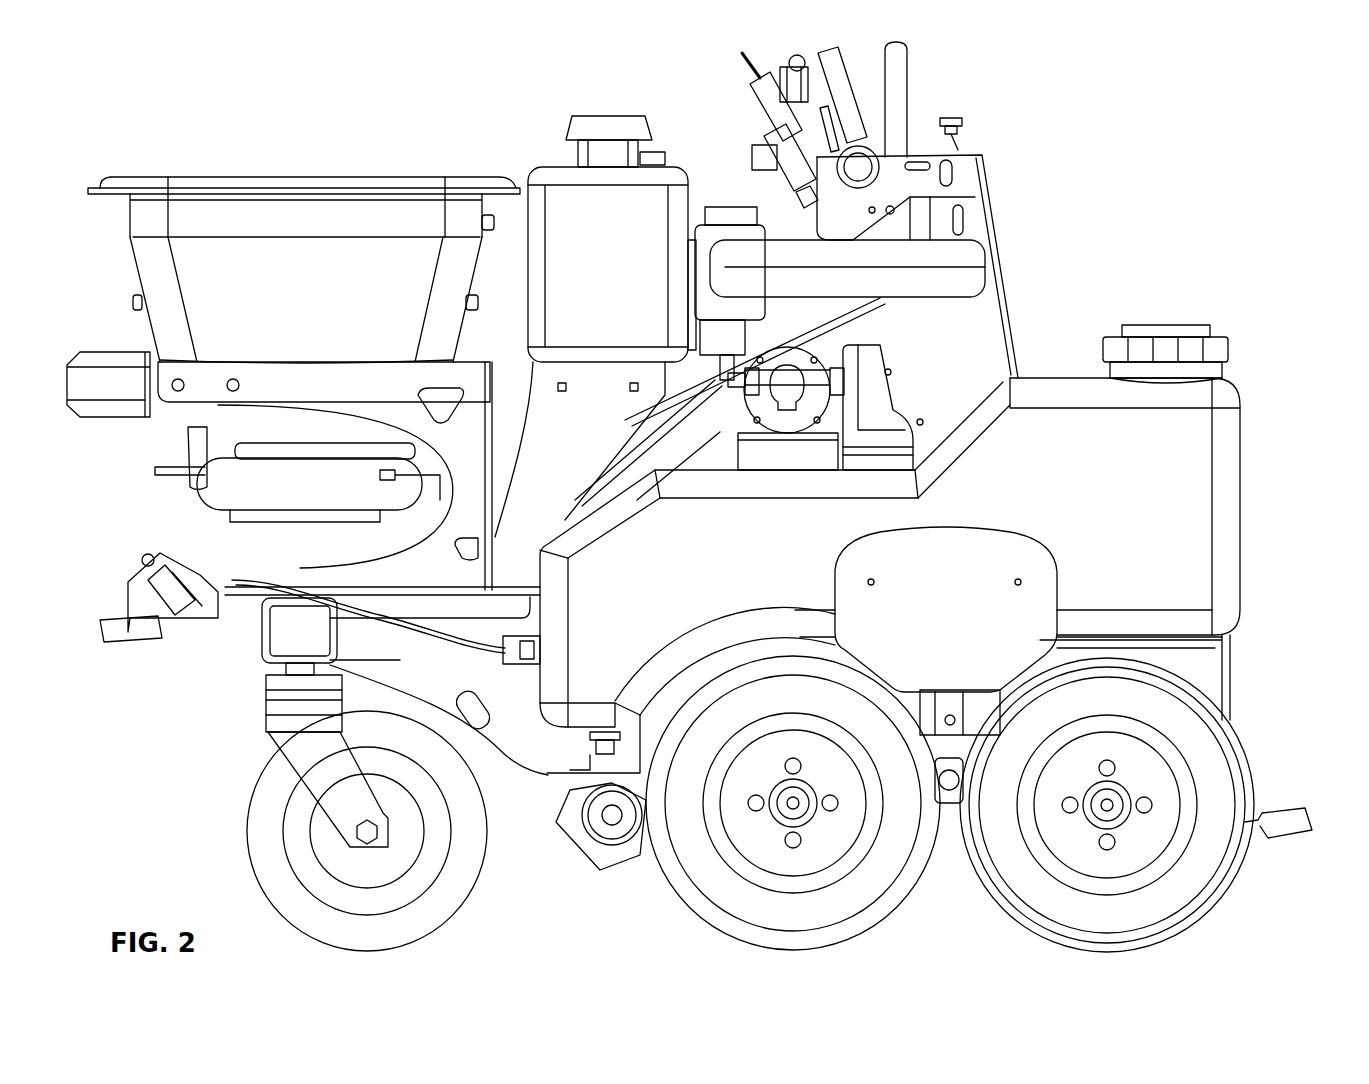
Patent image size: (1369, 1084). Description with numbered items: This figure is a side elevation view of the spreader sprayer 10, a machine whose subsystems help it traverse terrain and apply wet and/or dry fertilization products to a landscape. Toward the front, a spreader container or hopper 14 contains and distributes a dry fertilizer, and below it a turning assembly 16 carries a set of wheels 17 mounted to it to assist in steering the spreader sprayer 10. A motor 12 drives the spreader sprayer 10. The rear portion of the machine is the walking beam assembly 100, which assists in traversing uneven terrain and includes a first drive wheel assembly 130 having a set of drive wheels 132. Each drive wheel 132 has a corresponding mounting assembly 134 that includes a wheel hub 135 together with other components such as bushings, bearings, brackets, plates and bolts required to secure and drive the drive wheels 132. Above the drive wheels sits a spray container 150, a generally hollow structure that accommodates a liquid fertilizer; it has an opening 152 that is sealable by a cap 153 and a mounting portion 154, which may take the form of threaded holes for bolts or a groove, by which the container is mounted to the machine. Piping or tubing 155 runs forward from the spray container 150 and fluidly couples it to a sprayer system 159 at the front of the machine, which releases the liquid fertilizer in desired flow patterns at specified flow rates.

The spreader sprayer 10 is at (146, 78).
The motor 12 is at (548, 770).
The hopper 14 is at (138, 228).
The turning assembly 16 is at (250, 744).
The wheels 17 is at (248, 850).
The walking beam assembly 100 is at (964, 811).
The first drive wheel assembly 130 is at (1238, 912).
The drive wheels 132 is at (672, 900).
The mounting assembly 134 is at (1082, 842).
The wheel hub 135 is at (775, 823).
The spray container 150 is at (1242, 523).
The opening 152 is at (1240, 372).
The cap 153 is at (1233, 345).
The mounting portion 154 is at (1230, 636).
The piping or tubing 155 is at (398, 624).
The sprayer system 159 is at (126, 640).